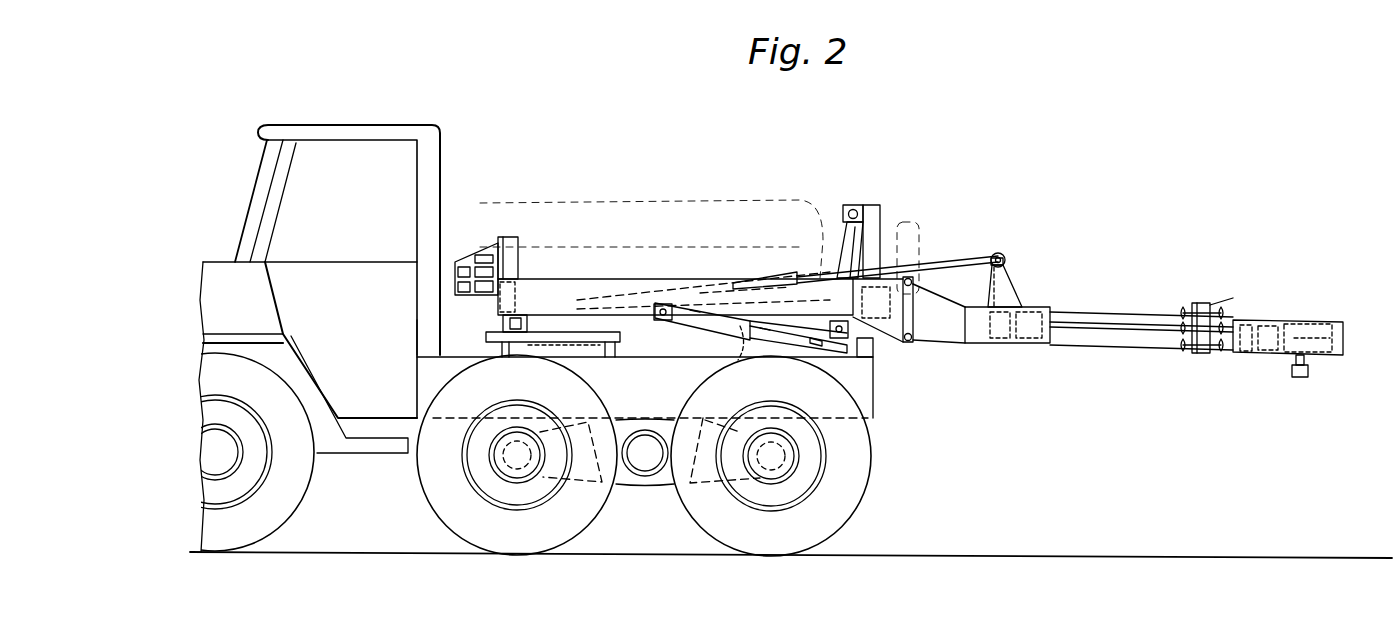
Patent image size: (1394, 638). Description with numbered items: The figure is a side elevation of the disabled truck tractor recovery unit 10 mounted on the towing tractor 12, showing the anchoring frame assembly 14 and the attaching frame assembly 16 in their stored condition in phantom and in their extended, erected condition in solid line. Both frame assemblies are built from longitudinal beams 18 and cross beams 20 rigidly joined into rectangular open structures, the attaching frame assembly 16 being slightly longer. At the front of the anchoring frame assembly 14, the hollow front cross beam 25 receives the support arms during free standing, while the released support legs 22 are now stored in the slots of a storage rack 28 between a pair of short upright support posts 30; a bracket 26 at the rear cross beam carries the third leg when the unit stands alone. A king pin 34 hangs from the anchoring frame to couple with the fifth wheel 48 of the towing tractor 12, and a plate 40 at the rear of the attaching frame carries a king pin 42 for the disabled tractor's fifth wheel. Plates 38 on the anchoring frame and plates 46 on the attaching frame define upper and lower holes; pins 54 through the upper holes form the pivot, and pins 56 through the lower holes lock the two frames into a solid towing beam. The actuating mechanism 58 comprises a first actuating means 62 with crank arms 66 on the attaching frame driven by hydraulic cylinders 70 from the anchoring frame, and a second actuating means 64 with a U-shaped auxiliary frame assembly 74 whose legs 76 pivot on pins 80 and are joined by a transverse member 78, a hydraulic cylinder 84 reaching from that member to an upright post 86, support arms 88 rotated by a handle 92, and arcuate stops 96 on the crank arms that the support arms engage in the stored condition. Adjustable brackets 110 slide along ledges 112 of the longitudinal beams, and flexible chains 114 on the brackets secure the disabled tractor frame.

The disabled truck tractor recovery unit 10 is at (912, 275).
The towing tractor 12 is at (433, 122).
The anchoring frame assembly 14 is at (548, 262).
The attaching frame assembly 16 is at (689, 211).
The longitudinal beams 18 is at (633, 286).
The cross beams 20 is at (518, 292).
The support legs 22 is at (487, 295).
The front cross beam 25 is at (467, 332).
The bracket 26 is at (898, 350).
The storage rack 28 is at (477, 262).
The upright support posts 30 is at (510, 245).
The king pin 34 is at (575, 344).
The plates 38 is at (911, 312).
The plate 40 is at (1295, 322).
The king pin 42 is at (1305, 378).
The plates 46 is at (960, 343).
The fifth wheel 48 is at (533, 346).
The pins 54 is at (913, 280).
The pins 56 is at (913, 342).
The actuating mechanism 58 is at (677, 332).
The first actuating means 62 is at (1000, 251).
The second actuating means 64 is at (830, 357).
The crank arms 66 is at (847, 243).
The hydraulic cylinders 70 is at (748, 273).
The auxiliary frame assembly 74 is at (728, 345).
The legs 76 is at (705, 324).
The transverse member 78 is at (873, 370).
The pins 80 is at (660, 315).
The hydraulic cylinder 84 is at (872, 214).
The upright post 86 is at (882, 233).
The support arms 88 is at (742, 346).
The handle 92 is at (822, 353).
The arcuate stops 96 is at (1005, 263).
The adjustable brackets 110 is at (1200, 303).
The ledges 112 is at (1090, 315).
The flexible chains 114 is at (1218, 357).